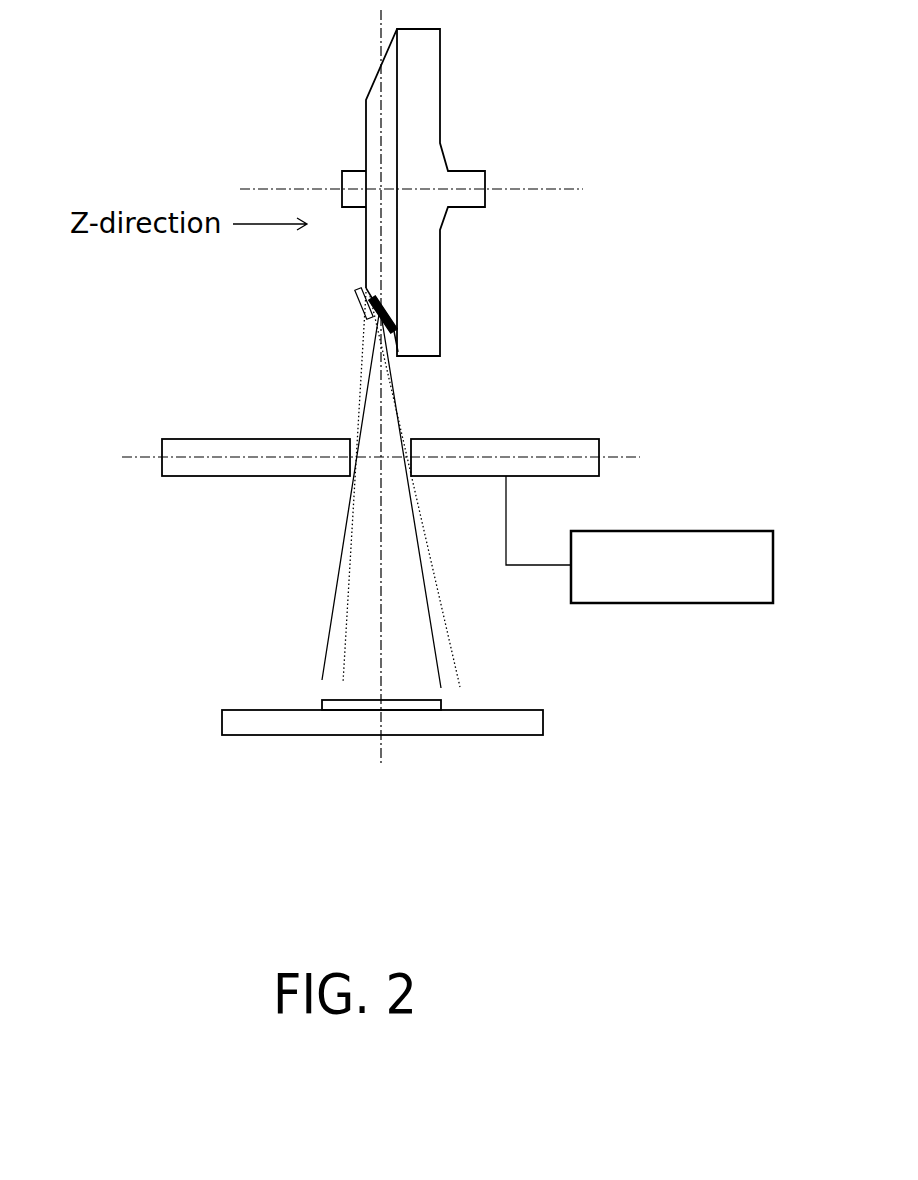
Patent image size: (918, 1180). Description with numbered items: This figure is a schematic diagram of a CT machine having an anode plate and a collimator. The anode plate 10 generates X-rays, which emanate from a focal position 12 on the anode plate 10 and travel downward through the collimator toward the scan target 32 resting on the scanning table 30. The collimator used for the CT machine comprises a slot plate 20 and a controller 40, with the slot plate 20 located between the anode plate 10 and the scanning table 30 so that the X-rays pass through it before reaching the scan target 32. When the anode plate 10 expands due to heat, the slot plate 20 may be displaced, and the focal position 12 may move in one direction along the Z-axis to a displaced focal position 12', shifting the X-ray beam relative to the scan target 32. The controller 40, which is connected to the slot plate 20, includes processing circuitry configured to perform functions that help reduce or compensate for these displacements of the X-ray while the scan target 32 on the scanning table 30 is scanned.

The anode plate 10 is at (388, 122).
The focal position 12 is at (432, 316).
The displaced focal position 12' is at (320, 293).
The slot plate 20 is at (537, 446).
The scanning table 30 is at (242, 712).
The scan target 32 is at (420, 702).
The controller 40 is at (748, 581).